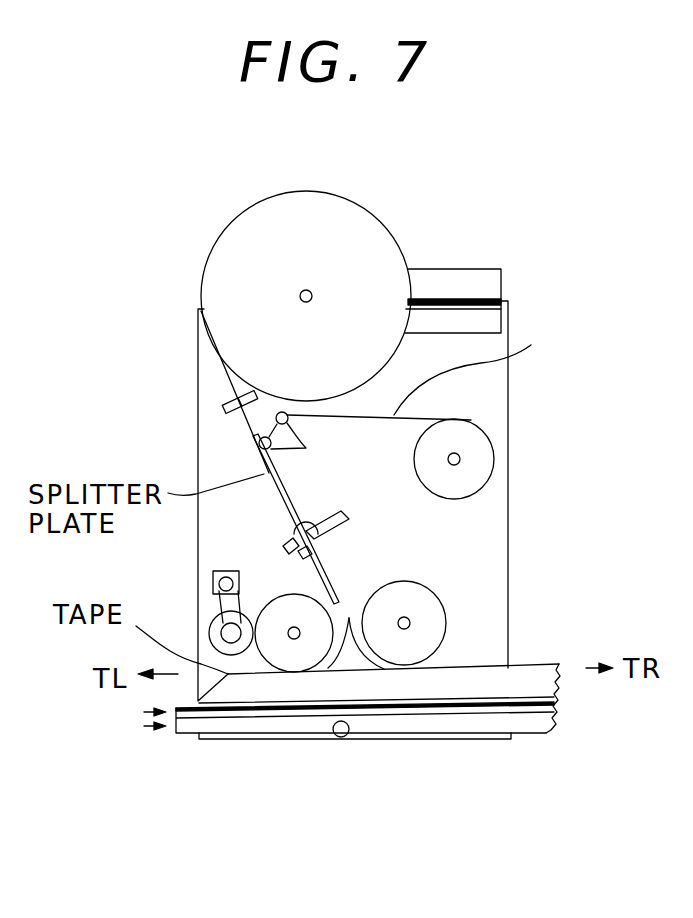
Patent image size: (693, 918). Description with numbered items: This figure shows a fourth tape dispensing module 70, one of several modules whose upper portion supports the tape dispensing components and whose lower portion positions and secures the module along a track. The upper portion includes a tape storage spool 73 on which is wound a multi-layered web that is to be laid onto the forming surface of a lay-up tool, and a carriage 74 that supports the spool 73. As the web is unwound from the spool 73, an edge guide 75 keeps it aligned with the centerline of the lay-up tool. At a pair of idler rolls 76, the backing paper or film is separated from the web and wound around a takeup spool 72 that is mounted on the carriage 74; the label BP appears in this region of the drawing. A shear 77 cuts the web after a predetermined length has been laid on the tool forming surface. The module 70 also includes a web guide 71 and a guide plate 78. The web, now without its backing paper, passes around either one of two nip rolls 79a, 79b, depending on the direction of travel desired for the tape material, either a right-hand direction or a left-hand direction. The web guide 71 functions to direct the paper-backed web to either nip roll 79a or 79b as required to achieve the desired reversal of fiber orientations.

The module 70 is at (336, 764).
The web guide 71 is at (345, 657).
The takeup spool 72 is at (480, 430).
The tape storage spool 73 is at (223, 227).
The carriage 74 is at (448, 284).
The edge guide 75 is at (223, 398).
The idler rolls 76 is at (306, 439).
The shear 77 is at (283, 528).
The guide plate 78 is at (325, 580).
The nip roll 79a is at (443, 610).
The nip roll 79b is at (276, 592).
The back plate BP is at (431, 376).